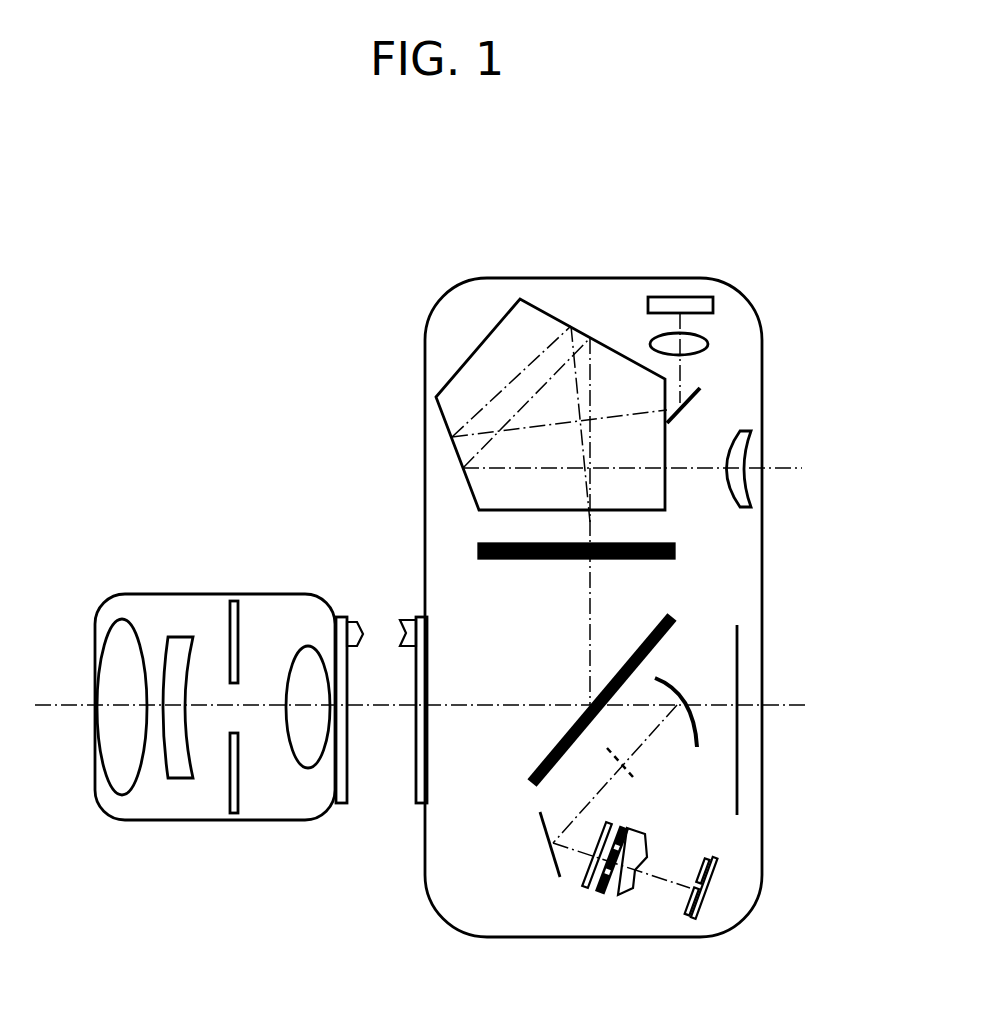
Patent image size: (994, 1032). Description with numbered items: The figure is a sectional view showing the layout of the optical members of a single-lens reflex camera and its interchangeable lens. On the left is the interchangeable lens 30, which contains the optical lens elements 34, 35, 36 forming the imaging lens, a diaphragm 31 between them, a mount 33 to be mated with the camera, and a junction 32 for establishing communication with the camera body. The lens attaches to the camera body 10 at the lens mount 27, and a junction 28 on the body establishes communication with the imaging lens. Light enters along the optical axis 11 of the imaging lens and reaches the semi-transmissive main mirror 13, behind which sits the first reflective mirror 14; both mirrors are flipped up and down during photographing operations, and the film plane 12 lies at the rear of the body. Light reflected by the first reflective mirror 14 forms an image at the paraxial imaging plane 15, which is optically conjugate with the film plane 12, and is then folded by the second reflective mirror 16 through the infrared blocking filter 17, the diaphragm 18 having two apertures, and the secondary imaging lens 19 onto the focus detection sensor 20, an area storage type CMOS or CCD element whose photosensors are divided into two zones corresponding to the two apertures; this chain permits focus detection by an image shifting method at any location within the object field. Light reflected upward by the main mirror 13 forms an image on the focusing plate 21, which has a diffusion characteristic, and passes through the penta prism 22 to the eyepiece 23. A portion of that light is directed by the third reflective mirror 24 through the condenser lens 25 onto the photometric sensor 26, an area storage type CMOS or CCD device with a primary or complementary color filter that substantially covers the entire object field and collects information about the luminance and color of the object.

The camera body 10 is at (423, 428).
The optical axis 11 is at (465, 705).
The film plane 12 is at (738, 668).
The semi-transmissive main mirror 13 is at (677, 618).
The first reflective mirror 14 is at (665, 681).
The paraxial imaging plane 15 is at (641, 786).
The second reflective mirror 16 is at (542, 835).
The infrared blocking filter 17 is at (583, 880).
The diaphragm 18 is at (598, 893).
The secondary imaging lens 19 is at (618, 898).
The focus detection sensor 20 is at (712, 870).
The focusing plate 21 is at (540, 560).
The penta prism 22 is at (552, 312).
The eyepiece 23 is at (752, 437).
The third reflective mirror 24 is at (700, 397).
The condenser lens 25 is at (708, 343).
The photometric sensor 26 is at (692, 297).
The lens mount 27 is at (420, 730).
The junction 28 is at (405, 620).
The interchangeable lens 30 is at (185, 595).
The diaphragm 31 is at (239, 800).
The junction 32 is at (353, 620).
The mount 33 is at (348, 795).
The optical lens element 34 is at (127, 775).
The optical lens element 35 is at (185, 778).
The optical lens element 36 is at (306, 767).